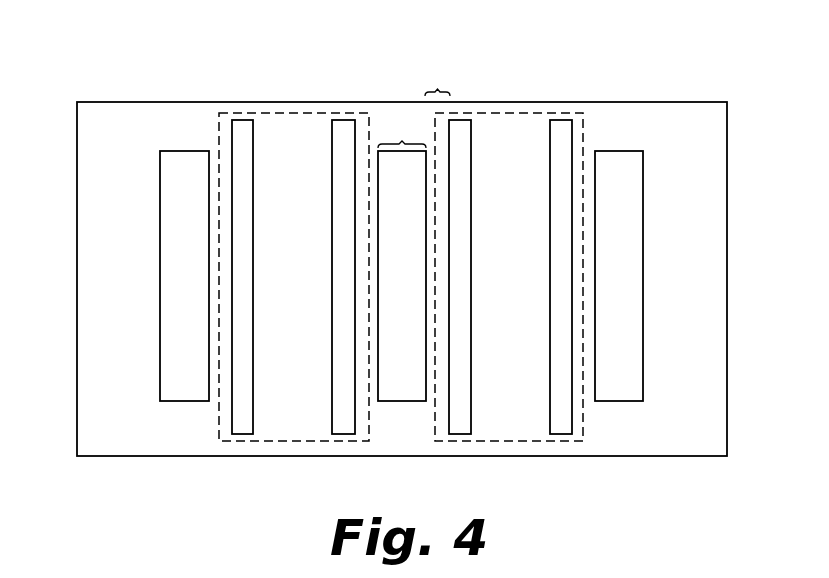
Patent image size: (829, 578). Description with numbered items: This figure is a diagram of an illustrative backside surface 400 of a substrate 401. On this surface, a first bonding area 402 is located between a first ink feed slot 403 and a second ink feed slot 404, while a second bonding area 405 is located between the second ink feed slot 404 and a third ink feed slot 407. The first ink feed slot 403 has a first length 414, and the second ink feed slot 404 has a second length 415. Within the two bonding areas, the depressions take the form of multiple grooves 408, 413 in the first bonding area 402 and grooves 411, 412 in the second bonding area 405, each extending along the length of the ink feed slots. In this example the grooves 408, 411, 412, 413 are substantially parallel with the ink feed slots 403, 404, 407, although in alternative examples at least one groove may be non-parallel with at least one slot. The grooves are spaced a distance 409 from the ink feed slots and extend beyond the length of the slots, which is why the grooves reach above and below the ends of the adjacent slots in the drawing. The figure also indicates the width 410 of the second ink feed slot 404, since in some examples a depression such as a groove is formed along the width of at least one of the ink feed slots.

The backside surface 400 is at (393, 260).
The substrate 401 is at (139, 145).
The first bonding area 402 is at (277, 254).
The first ink feed slot 403 is at (205, 283).
The second ink feed slot 404 is at (421, 285).
The second bonding area 405 is at (528, 252).
The third ink feed slot 407 is at (638, 285).
The groove 408 is at (242, 128).
The distance 409 is at (441, 80).
The width 410 is at (402, 131).
The groove 411 is at (464, 127).
The groove 412 is at (564, 128).
The groove 413 is at (340, 128).
The first length 414 is at (160, 252).
The second length 415 is at (370, 389).